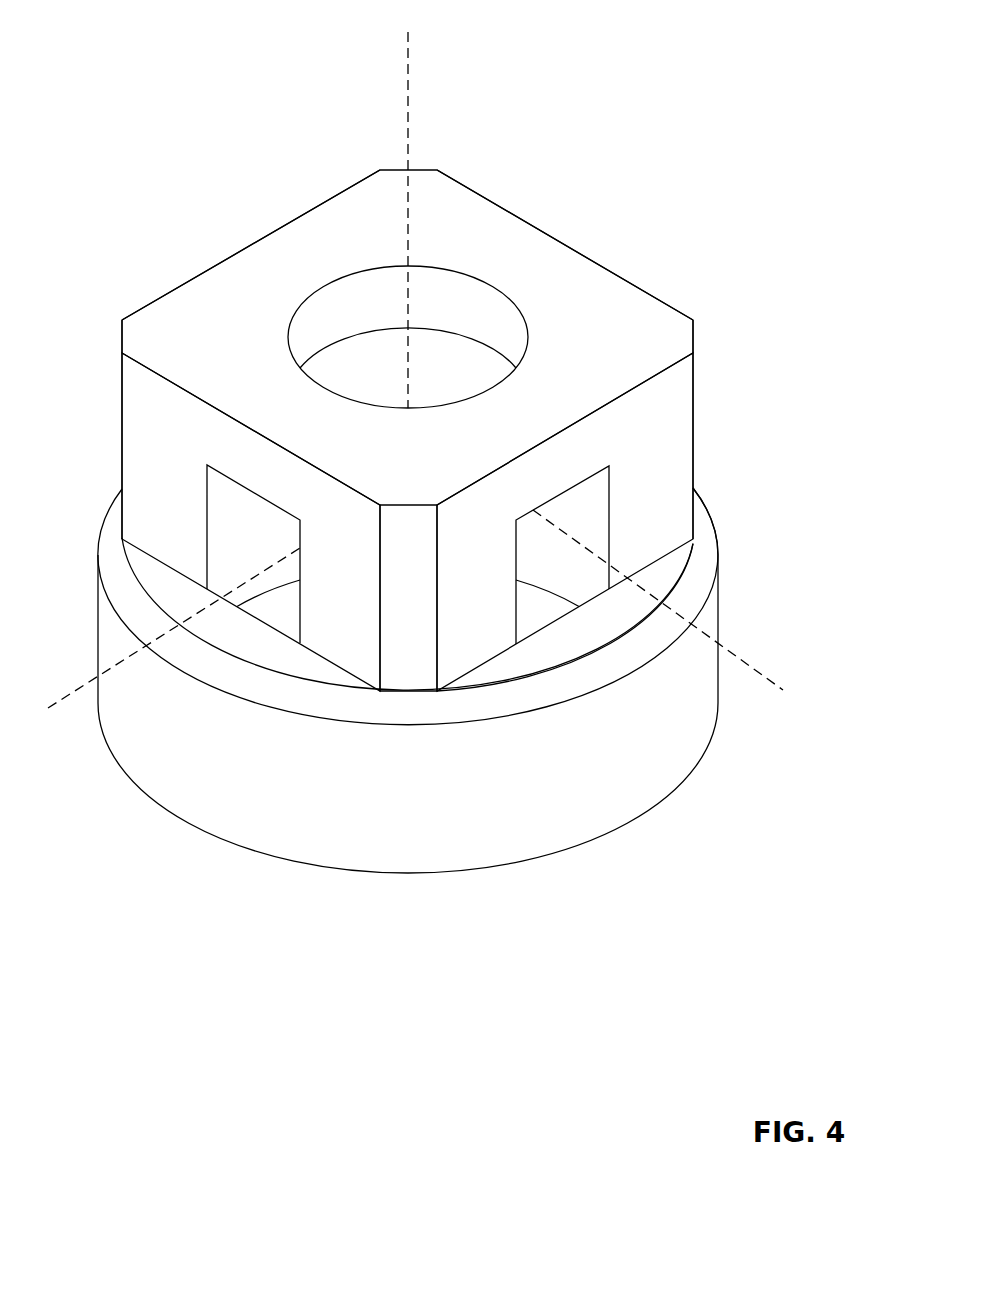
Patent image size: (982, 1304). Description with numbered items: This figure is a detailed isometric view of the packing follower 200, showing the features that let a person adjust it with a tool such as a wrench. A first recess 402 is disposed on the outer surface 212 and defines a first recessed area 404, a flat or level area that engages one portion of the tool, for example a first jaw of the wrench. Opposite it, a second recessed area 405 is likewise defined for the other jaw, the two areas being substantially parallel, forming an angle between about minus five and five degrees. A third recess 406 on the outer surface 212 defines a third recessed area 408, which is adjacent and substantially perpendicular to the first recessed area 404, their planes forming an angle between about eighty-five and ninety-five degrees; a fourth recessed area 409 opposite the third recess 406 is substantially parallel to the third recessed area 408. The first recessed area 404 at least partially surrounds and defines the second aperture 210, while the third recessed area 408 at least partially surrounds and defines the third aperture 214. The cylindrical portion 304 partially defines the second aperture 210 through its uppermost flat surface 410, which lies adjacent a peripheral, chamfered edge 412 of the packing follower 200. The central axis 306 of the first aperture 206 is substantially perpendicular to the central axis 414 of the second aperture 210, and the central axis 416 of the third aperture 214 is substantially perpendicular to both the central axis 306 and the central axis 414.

The packing follower 200 is at (421, 170).
The first aperture 206 is at (467, 305).
The second aperture 210 is at (528, 568).
The outer surface 212 is at (428, 853).
The third aperture 214 is at (284, 603).
The cylindrical portion 304 is at (633, 820).
The central axis 306 is at (408, 63).
The first recess 402 is at (668, 531).
The first recessed area 404 is at (489, 648).
The second recessed area 405 is at (212, 268).
The third recess 406 is at (147, 530).
The third recessed area 408 is at (356, 565).
The fourth recessed area 409 is at (562, 241).
The flat surface 410 is at (573, 644).
The peripheral edge 412 is at (686, 560).
The central axis 414 is at (762, 672).
The central axis 416 is at (63, 700).